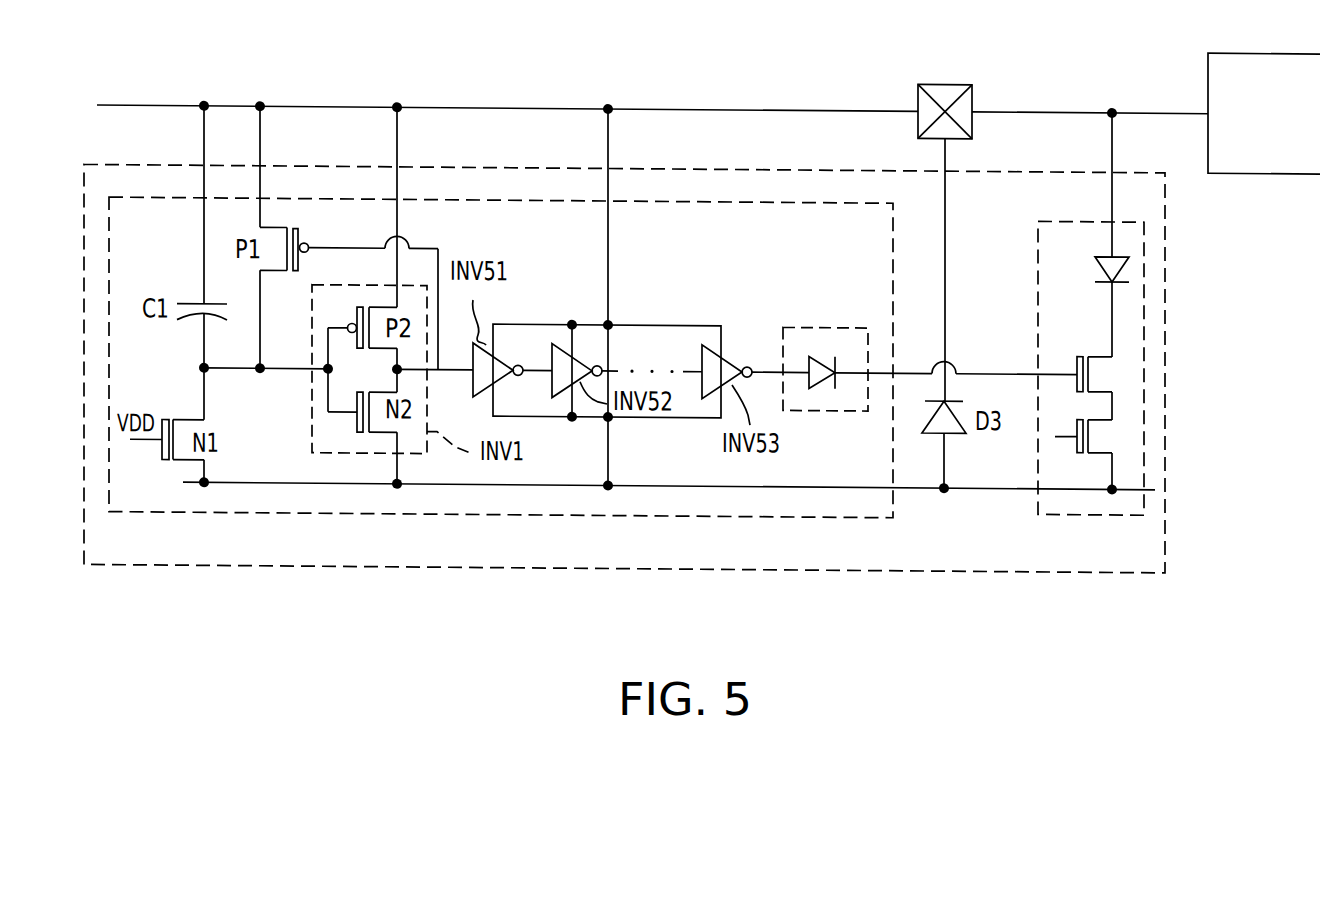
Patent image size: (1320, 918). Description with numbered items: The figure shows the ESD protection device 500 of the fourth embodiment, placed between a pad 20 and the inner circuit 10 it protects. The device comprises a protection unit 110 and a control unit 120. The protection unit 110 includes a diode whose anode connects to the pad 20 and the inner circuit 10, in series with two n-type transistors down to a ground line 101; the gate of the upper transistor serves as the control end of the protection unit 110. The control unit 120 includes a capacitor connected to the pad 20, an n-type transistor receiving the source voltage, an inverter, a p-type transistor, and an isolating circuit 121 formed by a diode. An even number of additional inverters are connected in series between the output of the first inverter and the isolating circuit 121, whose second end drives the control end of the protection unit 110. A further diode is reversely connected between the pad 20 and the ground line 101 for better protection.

The inner circuit 10 is at (1270, 166).
The pad 20 is at (945, 76).
The ESD protection device 500 is at (1165, 418).
The control unit 120 is at (820, 512).
The isolating circuit 121 is at (827, 315).
The ground line 101 is at (922, 483).
The protection unit 110 is at (1062, 507).